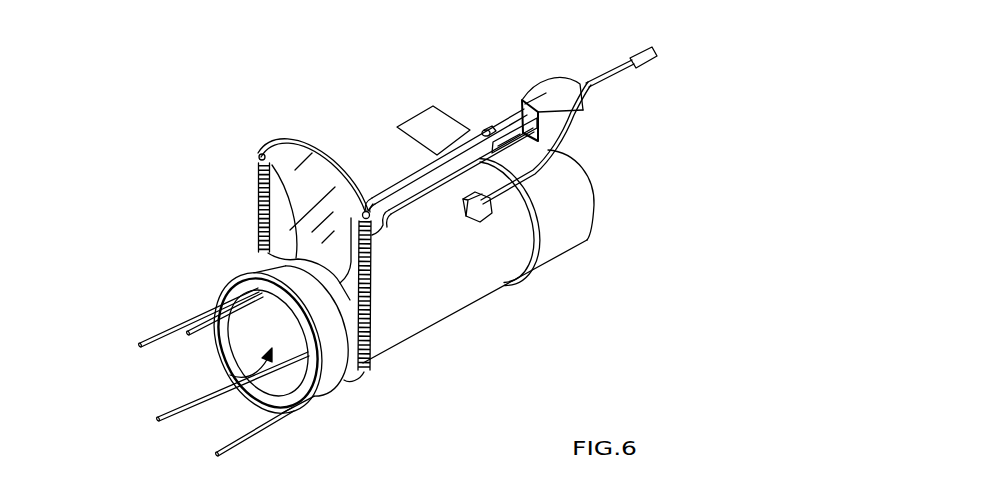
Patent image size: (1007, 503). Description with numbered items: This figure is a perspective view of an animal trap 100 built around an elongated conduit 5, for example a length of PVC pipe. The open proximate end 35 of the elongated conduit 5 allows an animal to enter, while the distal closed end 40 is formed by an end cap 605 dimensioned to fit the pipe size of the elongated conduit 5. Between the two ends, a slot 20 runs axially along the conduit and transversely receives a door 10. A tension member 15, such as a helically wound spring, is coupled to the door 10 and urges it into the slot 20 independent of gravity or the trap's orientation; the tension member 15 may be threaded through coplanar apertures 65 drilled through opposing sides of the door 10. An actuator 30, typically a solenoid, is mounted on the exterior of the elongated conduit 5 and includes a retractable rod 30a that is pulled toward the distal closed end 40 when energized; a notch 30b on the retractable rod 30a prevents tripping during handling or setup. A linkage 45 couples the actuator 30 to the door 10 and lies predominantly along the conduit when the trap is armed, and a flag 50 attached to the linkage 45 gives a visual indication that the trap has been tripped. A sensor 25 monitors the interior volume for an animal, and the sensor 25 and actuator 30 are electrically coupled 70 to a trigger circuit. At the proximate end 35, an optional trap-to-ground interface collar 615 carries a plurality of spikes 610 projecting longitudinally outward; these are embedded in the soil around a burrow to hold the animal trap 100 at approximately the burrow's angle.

The animal trap 100 is at (750, 103).
The elongated conduit 5 is at (457, 314).
The door 10 is at (290, 172).
The tension member 15 is at (355, 388).
The slot 20 is at (319, 319).
The sensor 25 is at (470, 228).
The actuator 30 is at (563, 90).
The retractable rod 30a is at (481, 129).
The notch 30b is at (495, 128).
The proximate end 35 is at (230, 375).
The distal closed end 40 is at (576, 169).
The linkage 45 is at (398, 186).
The flag 50 is at (425, 118).
The coplanar apertures 65 is at (258, 155).
The electrical coupling 70 is at (650, 60).
The end cap 605 is at (547, 276).
The spikes 610 is at (213, 300).
The trap-to-ground interface collar 615 is at (250, 268).